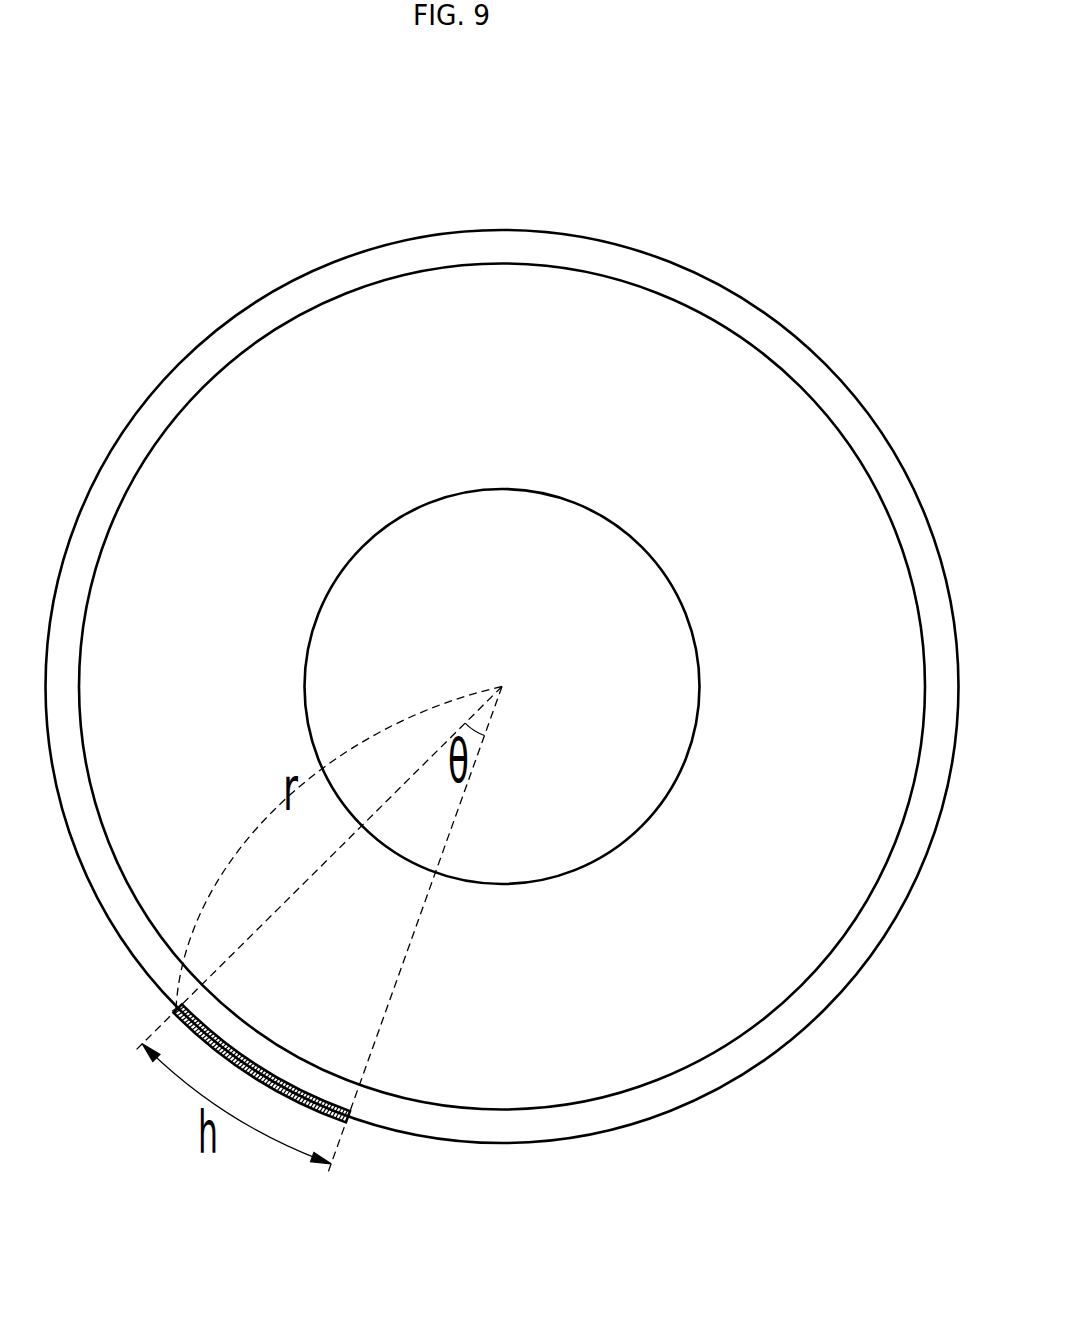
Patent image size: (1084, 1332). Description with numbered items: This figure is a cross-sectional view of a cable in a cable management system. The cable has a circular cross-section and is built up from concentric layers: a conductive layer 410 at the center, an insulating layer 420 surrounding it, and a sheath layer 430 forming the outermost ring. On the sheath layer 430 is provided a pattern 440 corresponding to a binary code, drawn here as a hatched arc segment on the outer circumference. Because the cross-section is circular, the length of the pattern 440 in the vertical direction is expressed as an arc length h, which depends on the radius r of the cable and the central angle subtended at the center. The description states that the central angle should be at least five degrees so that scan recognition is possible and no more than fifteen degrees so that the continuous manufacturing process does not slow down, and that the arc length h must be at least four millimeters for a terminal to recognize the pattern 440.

The conductive layer 410 is at (455, 532).
The insulating layer 420 is at (693, 375).
The sheath layer 430 is at (227, 345).
The pattern corresponding to a binary code 440 is at (287, 1098).